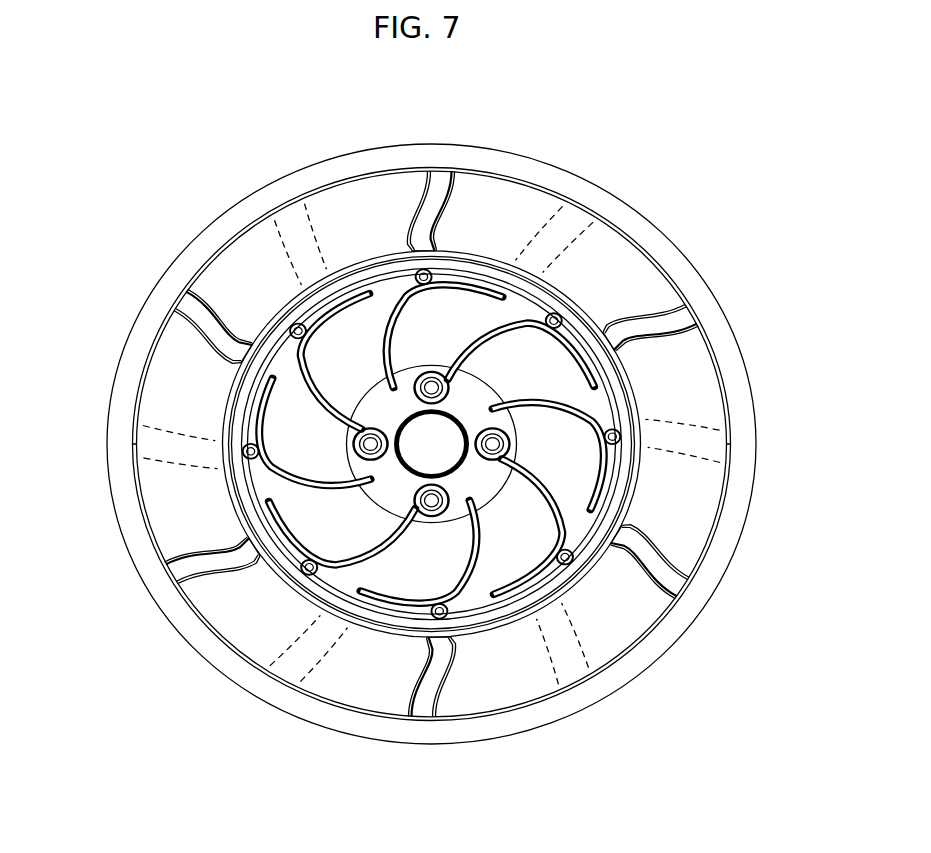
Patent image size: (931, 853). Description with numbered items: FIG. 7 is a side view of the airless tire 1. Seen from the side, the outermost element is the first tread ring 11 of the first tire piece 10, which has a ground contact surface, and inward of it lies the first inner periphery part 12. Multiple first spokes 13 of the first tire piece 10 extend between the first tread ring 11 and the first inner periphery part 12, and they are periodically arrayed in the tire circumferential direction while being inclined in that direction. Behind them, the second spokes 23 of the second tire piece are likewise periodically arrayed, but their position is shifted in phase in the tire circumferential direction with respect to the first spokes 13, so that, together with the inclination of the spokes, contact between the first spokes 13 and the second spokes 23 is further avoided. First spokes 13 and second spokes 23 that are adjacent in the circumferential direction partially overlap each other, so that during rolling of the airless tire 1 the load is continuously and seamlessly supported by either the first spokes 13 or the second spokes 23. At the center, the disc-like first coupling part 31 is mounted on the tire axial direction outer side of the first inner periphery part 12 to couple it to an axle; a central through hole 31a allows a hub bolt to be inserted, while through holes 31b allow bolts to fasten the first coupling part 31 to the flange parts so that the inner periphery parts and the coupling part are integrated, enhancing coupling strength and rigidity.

The airless tire 1 is at (632, 168).
The first tire piece 10 is at (553, 160).
The first tread ring 11 is at (653, 247).
The first inner periphery part 12 is at (643, 498).
The first spokes 13 is at (493, 215).
The second spokes 23 is at (440, 190).
The first coupling part 31 is at (398, 312).
The through hole 31a is at (432, 500).
The through hole 31b is at (307, 567).